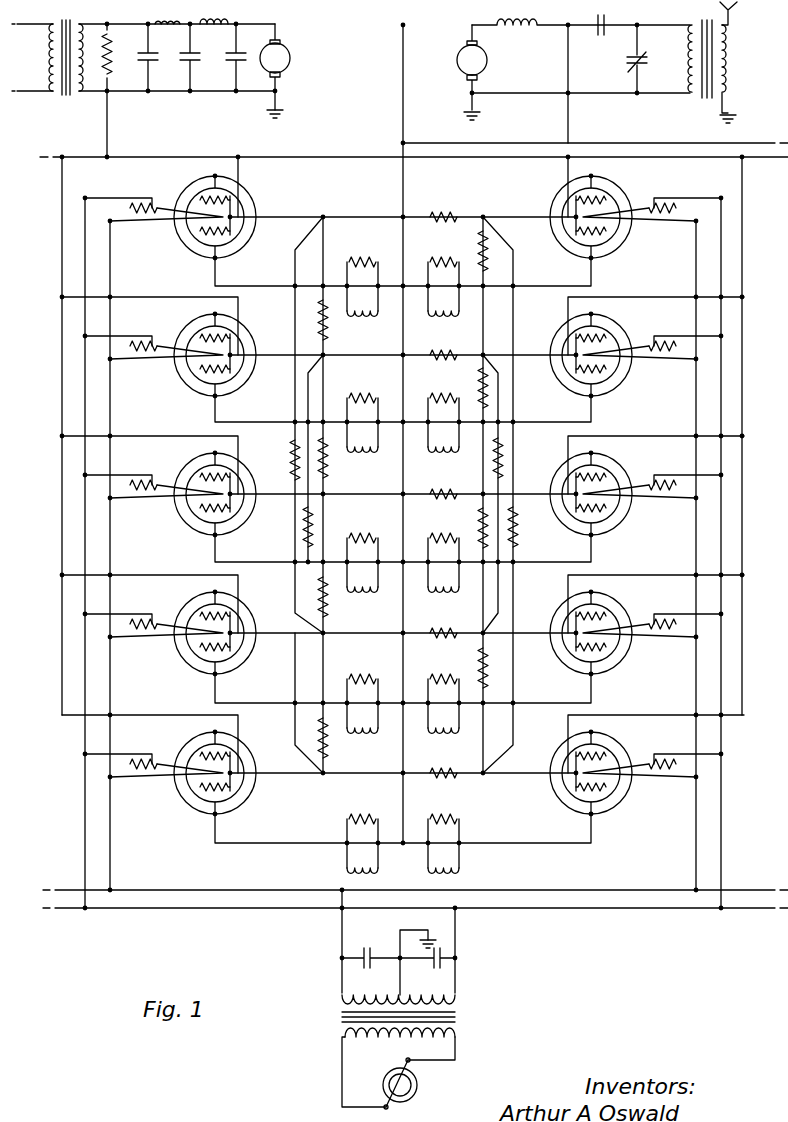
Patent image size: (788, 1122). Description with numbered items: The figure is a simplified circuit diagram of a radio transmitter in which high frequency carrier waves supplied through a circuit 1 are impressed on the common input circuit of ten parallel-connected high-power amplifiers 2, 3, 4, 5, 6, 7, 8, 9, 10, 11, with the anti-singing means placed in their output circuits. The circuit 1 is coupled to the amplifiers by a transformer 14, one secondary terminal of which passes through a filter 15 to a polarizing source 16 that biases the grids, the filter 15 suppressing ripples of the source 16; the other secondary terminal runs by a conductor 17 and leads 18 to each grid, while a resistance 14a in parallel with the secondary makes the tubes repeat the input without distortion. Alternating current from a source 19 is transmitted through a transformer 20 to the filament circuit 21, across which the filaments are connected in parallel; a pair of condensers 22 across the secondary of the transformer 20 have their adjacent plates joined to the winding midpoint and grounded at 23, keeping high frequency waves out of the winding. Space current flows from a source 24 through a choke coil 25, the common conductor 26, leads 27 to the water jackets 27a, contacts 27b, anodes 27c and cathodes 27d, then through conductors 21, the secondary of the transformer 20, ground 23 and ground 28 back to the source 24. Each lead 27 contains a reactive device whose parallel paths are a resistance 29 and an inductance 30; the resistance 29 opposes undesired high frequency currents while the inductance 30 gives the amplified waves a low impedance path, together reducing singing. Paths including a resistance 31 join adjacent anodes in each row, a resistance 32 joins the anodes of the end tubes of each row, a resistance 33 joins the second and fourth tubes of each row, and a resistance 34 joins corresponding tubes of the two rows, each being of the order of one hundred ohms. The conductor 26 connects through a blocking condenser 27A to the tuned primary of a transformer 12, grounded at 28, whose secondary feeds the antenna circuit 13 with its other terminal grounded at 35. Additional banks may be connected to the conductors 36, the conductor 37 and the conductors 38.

The circuit 1 is at (32, 57).
The transformer 14 is at (66, 24).
The resistance 14a is at (128, 80).
The filter 15 is at (190, 24).
The polarizing source 16 is at (290, 60).
The conductor 17 is at (105, 129).
The conductor 37 is at (756, 173).
The conductors 36 is at (395, 142).
The source 24 is at (457, 62).
The choke coil 25 is at (531, 38).
The conductor 26 is at (566, 74).
The blocking condenser 27A is at (598, 35).
The ground 28 is at (478, 113).
The transformer 12 is at (707, 50).
The antenna circuit 13 is at (735, 16).
The ground 35 is at (730, 105).
The leads 18 is at (238, 168).
The filament circuit 21 is at (86, 207).
The amplifier 2 is at (240, 217).
The amplifier 3 is at (240, 355).
The amplifier 4 is at (240, 493).
The amplifier 5 is at (240, 632).
The amplifier 6 is at (240, 772).
The amplifier 7 is at (612, 215).
The amplifier 8 is at (612, 352).
The amplifier 9 is at (612, 492).
The amplifier 10 is at (612, 632).
The amplifier 11 is at (612, 772).
The leads 27 is at (411, 840).
The water jacket 27a is at (242, 240).
The contacts 27b is at (213, 178).
The anode 27c is at (192, 230).
The cathode 27d is at (205, 205).
The resistance 29 is at (441, 817).
The inductance 30 is at (448, 868).
The resistance 31 is at (487, 250).
The resistance 32 is at (293, 448).
The resistance 33 is at (500, 455).
The resistance 34 is at (445, 210).
The conductors 38 is at (760, 888).
The condensers 22 is at (437, 964).
The ground 23 is at (442, 932).
The transformer 20 is at (455, 1032).
The source 19 is at (412, 1085).